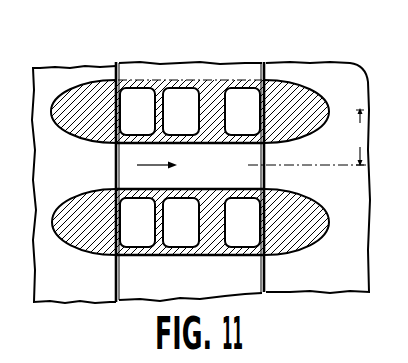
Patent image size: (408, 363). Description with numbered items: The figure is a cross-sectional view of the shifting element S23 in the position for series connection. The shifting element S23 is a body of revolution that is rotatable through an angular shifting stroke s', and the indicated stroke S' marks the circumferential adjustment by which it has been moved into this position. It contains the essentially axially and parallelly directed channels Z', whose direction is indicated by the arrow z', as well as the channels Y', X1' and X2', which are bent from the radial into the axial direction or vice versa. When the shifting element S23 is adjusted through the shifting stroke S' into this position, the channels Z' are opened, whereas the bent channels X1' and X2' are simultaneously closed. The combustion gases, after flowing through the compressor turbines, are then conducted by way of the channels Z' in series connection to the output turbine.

The shifting element S23 is at (210, 88).
The bent channel X1' is at (137, 111).
The bent channel Y' is at (181, 111).
The bent channel X2' is at (242, 111).
The channel direction z' is at (165, 166).
The axial channel Z' is at (299, 166).
The shifting stroke S' is at (360, 137).